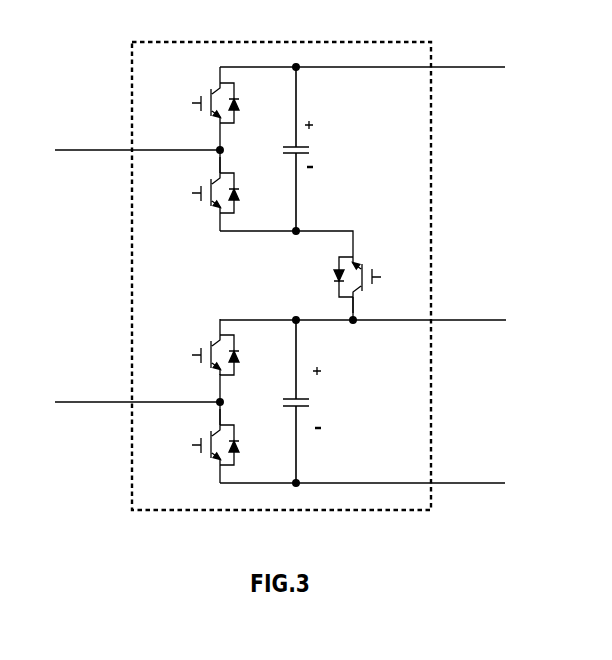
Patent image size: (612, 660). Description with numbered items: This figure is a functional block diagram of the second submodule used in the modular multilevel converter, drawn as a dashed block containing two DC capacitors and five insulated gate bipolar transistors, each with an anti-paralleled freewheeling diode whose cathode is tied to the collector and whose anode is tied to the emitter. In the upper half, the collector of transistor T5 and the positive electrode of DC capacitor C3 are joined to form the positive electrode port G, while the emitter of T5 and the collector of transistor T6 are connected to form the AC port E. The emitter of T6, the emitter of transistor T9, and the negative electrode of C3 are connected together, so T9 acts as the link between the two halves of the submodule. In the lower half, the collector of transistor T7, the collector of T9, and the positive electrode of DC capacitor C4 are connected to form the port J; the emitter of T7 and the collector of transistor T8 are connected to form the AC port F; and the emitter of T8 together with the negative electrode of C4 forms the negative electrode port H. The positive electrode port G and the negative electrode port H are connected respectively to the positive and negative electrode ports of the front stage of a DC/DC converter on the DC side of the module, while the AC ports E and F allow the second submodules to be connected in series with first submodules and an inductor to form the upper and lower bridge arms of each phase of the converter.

The insulated gate bipolar transistor T5 is at (195, 95).
The insulated gate bipolar transistor T6 is at (195, 185).
The insulated gate bipolar transistor T7 is at (195, 347).
The insulated gate bipolar transistor T8 is at (195, 437).
The insulated gate bipolar transistor T9 is at (337, 285).
The DC capacitor C3 is at (318, 149).
The DC capacitor C4 is at (317, 401).
The AC port E is at (123, 150).
The AC port F is at (123, 402).
The positive electrode port G is at (378, 68).
The negative electrode port H is at (378, 484).
The port J is at (374, 322).